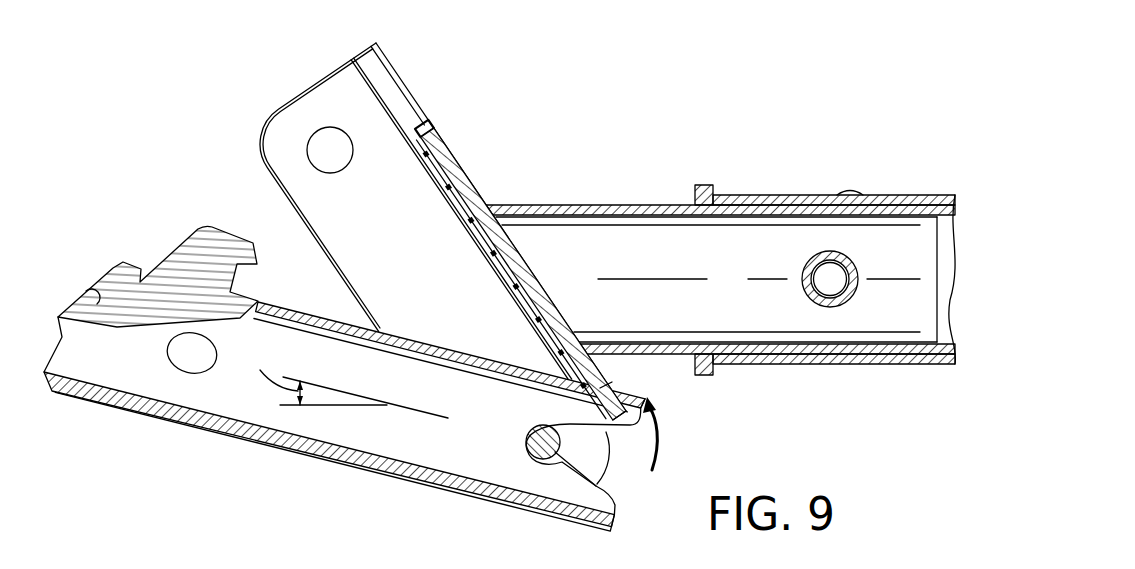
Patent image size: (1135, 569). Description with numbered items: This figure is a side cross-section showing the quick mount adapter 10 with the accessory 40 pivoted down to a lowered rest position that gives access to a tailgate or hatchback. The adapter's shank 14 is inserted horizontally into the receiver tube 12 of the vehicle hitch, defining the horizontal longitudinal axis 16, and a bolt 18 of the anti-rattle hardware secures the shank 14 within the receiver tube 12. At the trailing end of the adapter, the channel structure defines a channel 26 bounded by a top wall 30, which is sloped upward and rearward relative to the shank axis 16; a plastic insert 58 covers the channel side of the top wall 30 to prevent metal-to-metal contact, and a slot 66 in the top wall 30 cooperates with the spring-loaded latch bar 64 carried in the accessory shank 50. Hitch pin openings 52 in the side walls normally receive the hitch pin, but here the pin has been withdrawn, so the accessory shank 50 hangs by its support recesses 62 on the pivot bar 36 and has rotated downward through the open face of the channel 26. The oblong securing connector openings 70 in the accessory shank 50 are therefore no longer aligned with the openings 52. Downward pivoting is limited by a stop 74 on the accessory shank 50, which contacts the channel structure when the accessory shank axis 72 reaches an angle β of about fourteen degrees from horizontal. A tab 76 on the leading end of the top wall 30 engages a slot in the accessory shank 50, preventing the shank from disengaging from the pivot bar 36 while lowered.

The quick mount adapter 10 is at (592, 96).
The receiver tube 12 is at (782, 207).
The shank 14 is at (606, 213).
The longitudinal axis 16 is at (645, 278).
The bolt 18 is at (830, 278).
The channel 26 is at (413, 234).
The top wall 30 is at (456, 185).
The pivot bar 36 is at (607, 430).
The accessory 40 is at (54, 398).
The accessory shank 50 is at (332, 460).
The hitch pin openings 52 is at (329, 137).
The insert 58 is at (431, 123).
The support recesses 62 is at (578, 462).
The latch bar 64 is at (188, 252).
The slot 66 is at (392, 95).
The securing connector openings 70 is at (187, 362).
The accessory shank axis 72 is at (348, 391).
The stop 74 is at (628, 395).
The tab 76 is at (608, 380).